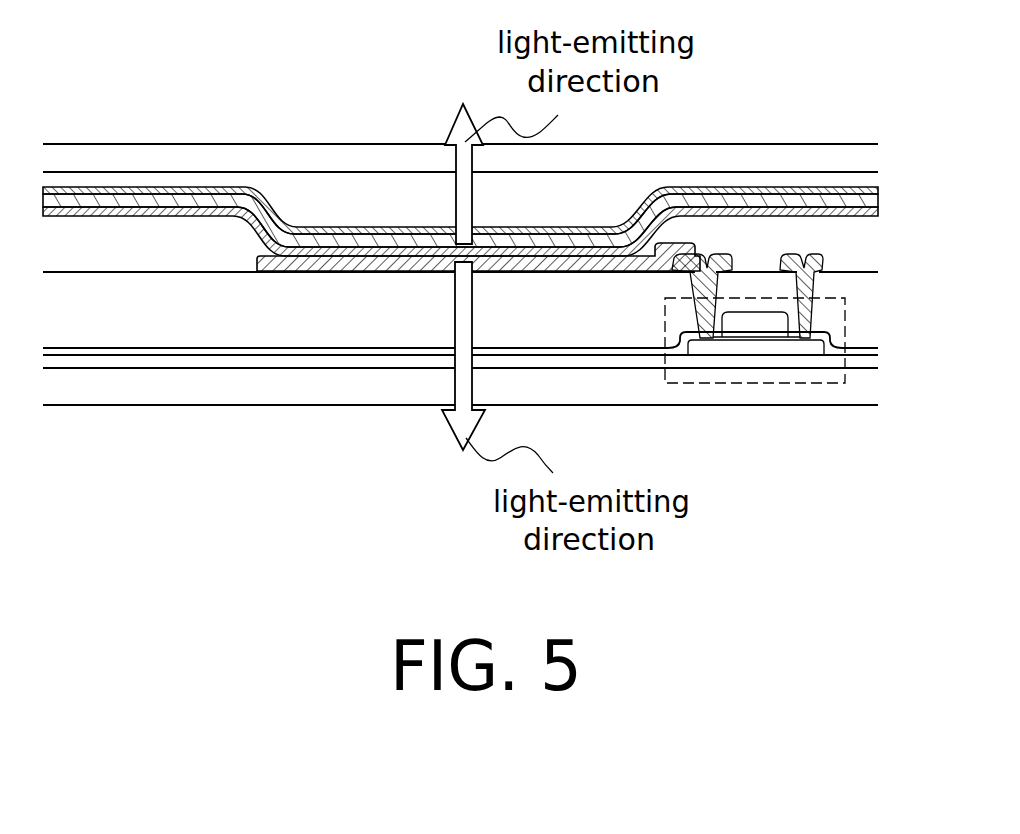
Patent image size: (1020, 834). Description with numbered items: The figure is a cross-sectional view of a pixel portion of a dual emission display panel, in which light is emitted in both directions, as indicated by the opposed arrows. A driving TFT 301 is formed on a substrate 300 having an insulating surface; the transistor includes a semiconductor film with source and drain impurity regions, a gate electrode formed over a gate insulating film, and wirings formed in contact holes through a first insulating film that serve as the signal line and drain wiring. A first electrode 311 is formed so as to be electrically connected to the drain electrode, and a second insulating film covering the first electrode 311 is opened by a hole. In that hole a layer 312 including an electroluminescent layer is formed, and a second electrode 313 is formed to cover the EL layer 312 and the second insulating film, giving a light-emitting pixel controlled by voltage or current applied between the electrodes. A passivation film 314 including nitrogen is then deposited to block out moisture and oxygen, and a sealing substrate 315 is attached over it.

The substrate 300 is at (247, 397).
The driving TFT 301 is at (822, 384).
The first electrode 311 is at (440, 273).
The layer including an electroluminescent layer 312 is at (771, 195).
The second electrode 313 is at (186, 196).
The passivation film 314 is at (270, 195).
The sealing substrate 315 is at (325, 147).